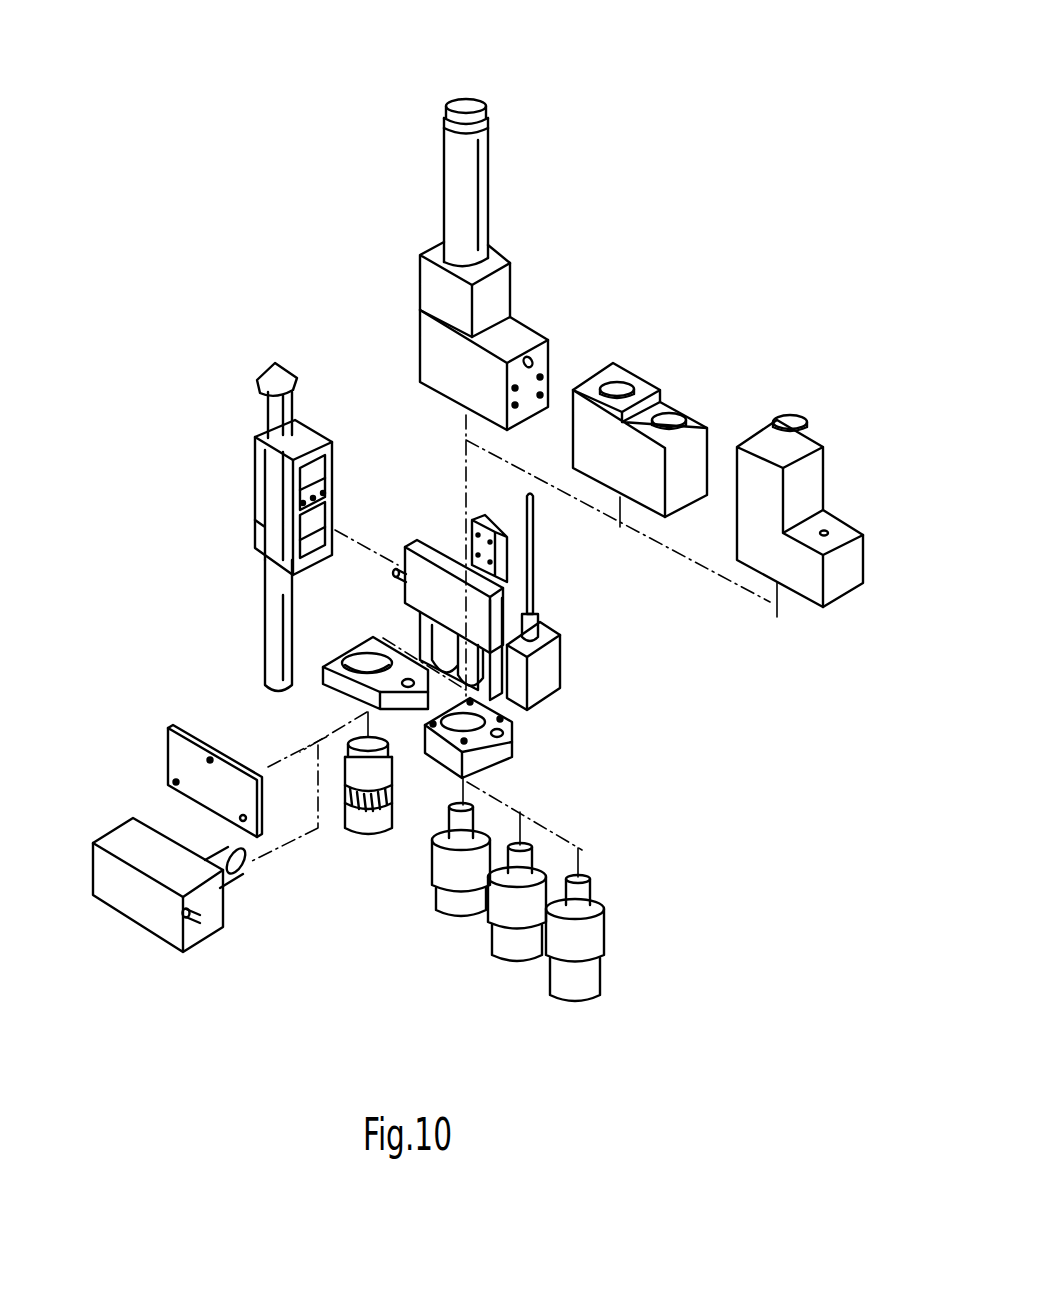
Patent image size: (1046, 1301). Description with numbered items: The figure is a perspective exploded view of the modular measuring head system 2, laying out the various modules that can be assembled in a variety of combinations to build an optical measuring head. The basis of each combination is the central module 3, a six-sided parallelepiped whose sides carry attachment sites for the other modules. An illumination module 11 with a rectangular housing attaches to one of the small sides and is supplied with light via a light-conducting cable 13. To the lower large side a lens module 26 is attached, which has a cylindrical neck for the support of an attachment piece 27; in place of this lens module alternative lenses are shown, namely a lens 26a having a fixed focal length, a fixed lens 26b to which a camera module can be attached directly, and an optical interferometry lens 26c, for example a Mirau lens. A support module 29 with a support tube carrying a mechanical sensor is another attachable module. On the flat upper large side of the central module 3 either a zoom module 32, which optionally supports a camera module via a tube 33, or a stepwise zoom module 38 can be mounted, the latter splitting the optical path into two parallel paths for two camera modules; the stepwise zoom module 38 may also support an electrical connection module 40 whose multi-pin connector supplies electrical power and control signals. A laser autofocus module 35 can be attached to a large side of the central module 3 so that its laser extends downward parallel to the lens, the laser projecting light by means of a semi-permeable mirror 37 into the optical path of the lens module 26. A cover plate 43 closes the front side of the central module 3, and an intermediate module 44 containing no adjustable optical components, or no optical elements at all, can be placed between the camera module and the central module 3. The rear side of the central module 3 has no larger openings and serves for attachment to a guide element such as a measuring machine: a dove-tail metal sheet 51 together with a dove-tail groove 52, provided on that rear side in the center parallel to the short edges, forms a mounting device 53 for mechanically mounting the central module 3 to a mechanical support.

The modular measuring head system 2 is at (700, 97).
The central module 3 is at (544, 606).
The illumination module 11 is at (545, 660).
The light-conducting cable 13 is at (535, 533).
The lens module 26 is at (363, 812).
The lens having a fixed focal length 26a is at (443, 877).
The fixed lens 26b is at (500, 905).
The optical interferometry lens 26c is at (555, 950).
The attachment piece 27 is at (345, 655).
The support module 29 is at (305, 440).
The zoom module 32 is at (525, 335).
The tube 33 is at (470, 188).
The laser autofocus module 35 is at (133, 903).
The semi-permeable mirror 37 is at (238, 867).
The stepwise zoom module 38 is at (695, 450).
The electrical connection module 40 is at (415, 545).
The cover plate 43 is at (185, 757).
The intermediate module 44 is at (808, 480).
The dove-tail metal sheet 51 is at (486, 523).
The dove-tail groove 52 is at (509, 594).
The mounting device 53 is at (587, 546).